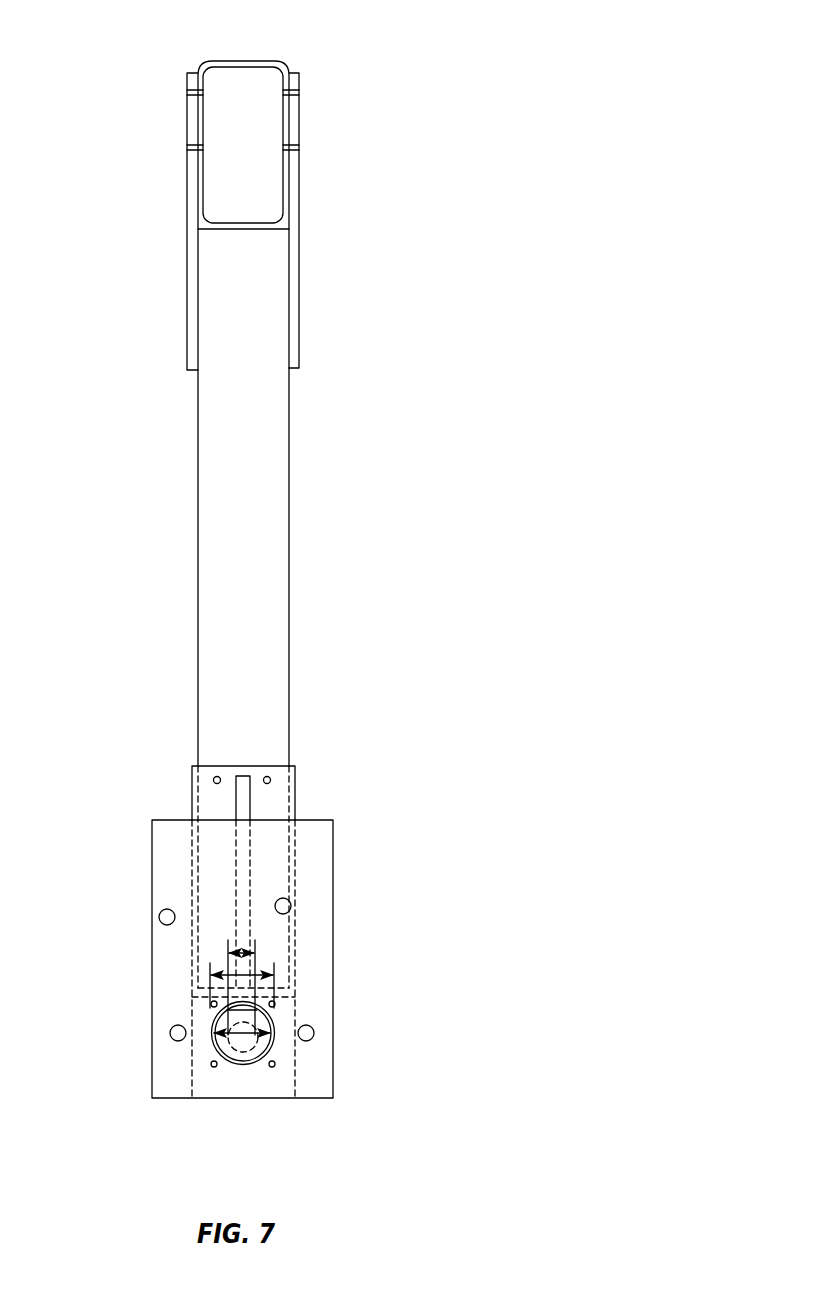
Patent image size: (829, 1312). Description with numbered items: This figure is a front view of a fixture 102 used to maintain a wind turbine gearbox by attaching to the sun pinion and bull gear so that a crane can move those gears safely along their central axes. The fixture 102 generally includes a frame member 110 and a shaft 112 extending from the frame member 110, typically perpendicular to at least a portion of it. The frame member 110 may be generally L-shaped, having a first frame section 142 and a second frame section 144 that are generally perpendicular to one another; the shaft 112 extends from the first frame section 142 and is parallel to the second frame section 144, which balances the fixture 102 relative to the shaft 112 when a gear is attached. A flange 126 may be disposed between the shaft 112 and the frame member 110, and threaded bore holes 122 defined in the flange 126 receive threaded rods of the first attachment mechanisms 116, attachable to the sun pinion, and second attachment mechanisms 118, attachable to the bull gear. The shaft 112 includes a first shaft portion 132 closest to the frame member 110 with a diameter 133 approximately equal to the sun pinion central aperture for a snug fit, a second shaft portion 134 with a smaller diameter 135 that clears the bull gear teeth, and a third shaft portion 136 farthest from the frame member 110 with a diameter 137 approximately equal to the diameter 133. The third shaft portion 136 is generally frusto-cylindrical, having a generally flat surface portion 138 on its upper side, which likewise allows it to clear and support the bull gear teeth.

The fixture 102 is at (434, 102).
The frame member 110 is at (365, 529).
The shaft 112 is at (227, 1070).
The first attachment mechanisms 116 is at (157, 1035).
The second attachment mechanisms 118 is at (147, 922).
The threaded bore hole 122 is at (167, 910).
The flange 126 is at (322, 843).
The first shaft portion 132 is at (257, 1060).
The diameter of first shaft portion 133 is at (268, 975).
The second shaft portion 134 is at (238, 1052).
The diameter of second shaft portion 135 is at (243, 950).
The third shaft portion 136 is at (270, 1058).
The diameter of third shaft portion 137 is at (238, 1048).
The flat surface portion 138 is at (247, 1010).
The first frame section 142 is at (253, 443).
The second frame section 144 is at (268, 117).